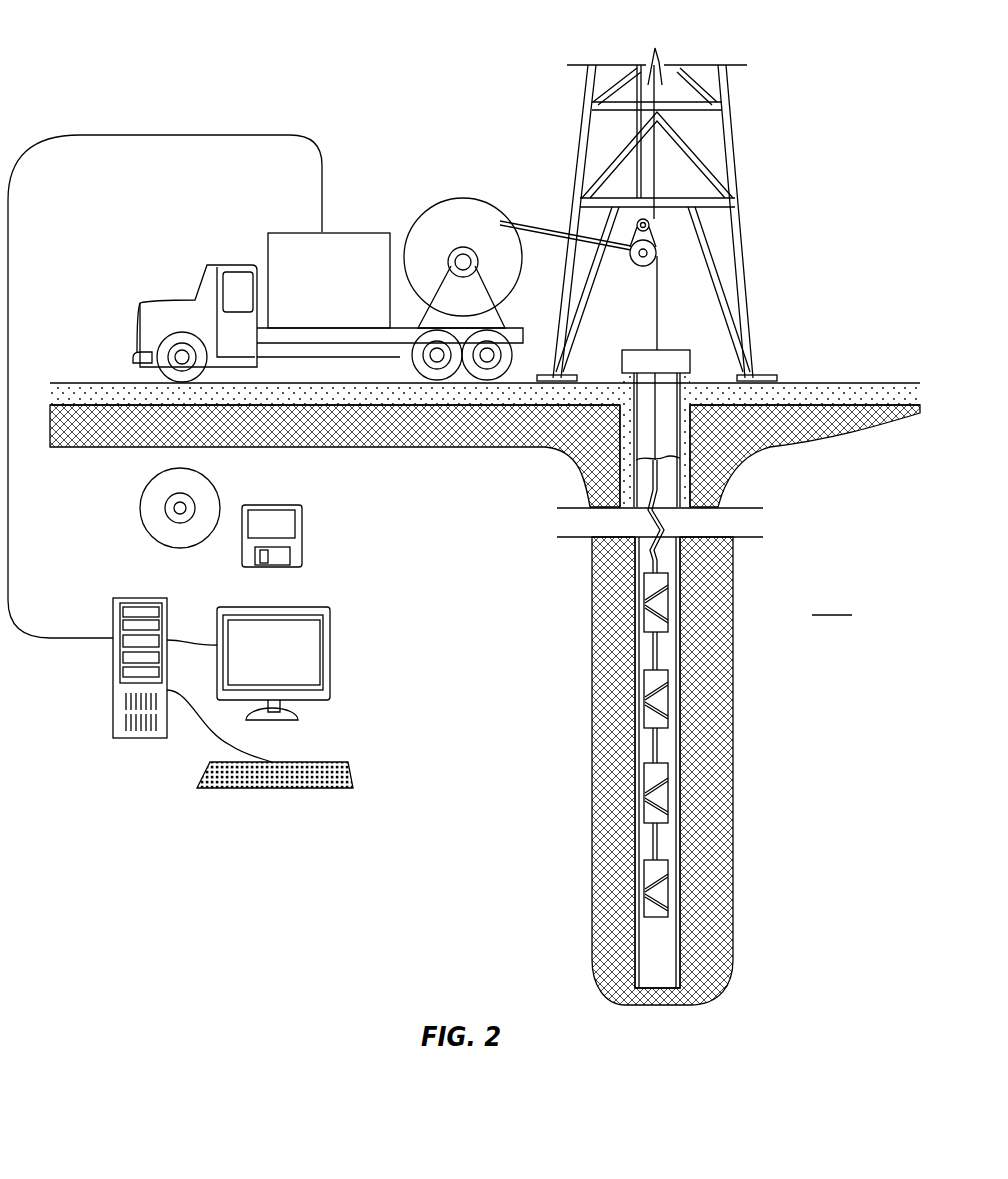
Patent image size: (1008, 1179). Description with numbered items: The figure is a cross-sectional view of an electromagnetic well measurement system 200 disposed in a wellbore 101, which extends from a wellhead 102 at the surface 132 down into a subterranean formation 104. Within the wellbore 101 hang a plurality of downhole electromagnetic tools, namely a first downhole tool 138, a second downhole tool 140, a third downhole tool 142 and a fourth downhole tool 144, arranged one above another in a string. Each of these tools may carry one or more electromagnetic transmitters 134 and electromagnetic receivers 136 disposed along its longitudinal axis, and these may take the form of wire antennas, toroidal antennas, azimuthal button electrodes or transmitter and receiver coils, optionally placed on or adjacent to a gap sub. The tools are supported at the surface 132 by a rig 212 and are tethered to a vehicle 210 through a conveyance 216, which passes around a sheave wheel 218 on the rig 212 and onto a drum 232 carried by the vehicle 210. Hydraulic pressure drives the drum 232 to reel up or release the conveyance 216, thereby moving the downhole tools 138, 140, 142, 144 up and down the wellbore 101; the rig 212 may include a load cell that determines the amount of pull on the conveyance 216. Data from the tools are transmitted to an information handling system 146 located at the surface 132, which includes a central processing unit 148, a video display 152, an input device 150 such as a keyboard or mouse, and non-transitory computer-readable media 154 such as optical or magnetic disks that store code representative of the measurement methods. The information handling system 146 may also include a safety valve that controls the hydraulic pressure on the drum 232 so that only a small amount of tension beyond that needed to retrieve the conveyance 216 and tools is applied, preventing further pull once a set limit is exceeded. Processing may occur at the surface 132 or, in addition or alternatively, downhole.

The electromagnetic well measurement system 200 is at (137, 57).
The wellbore 101 is at (752, 491).
The wellhead 102 is at (686, 330).
The subterranean formation 104 is at (832, 602).
The surface 132 is at (812, 383).
The electromagnetic transmitter 134 is at (650, 586).
The electromagnetic receiver 136 is at (650, 608).
The first downhole tool 138 is at (652, 888).
The second downhole tool 140 is at (668, 793).
The third downhole tool 142 is at (652, 695).
The fourth downhole tool 144 is at (668, 598).
The information handling system 146 is at (136, 819).
The central processing unit 148 is at (142, 604).
The input device 150 is at (350, 775).
The video display 152 is at (276, 608).
The non-transitory computer-readable media 154 is at (290, 473).
The vehicle 210 is at (343, 233).
The rig 212 is at (745, 214).
The conveyance 216 is at (655, 552).
The sheave wheel 218 is at (640, 268).
The drum 232 is at (455, 208).